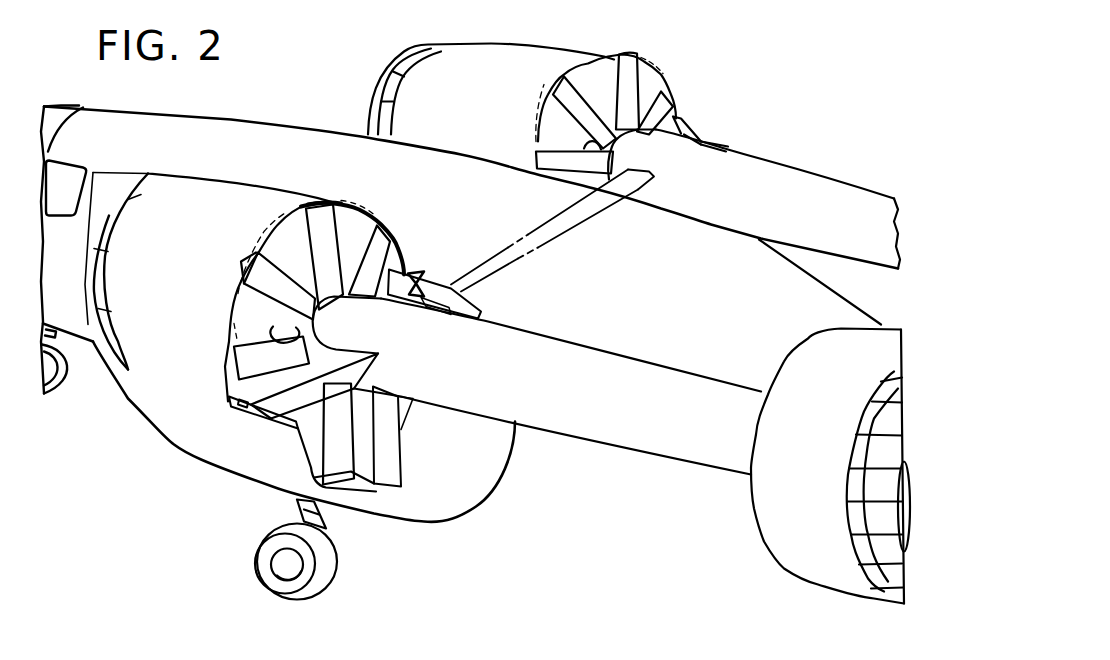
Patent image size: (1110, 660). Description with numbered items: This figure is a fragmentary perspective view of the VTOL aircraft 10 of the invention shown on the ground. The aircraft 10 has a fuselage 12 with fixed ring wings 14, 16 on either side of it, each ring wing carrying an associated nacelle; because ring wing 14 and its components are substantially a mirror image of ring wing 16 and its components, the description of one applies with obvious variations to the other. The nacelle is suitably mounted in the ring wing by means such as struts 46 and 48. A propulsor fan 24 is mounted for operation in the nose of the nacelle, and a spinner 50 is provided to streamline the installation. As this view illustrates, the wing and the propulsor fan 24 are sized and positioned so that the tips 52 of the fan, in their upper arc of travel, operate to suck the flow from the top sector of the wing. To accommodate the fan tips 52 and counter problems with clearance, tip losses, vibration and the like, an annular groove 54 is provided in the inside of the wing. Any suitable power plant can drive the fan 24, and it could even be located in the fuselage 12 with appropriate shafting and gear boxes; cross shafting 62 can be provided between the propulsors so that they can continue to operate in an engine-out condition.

The VTOL aircraft 10 is at (106, 409).
The fuselage 12 is at (228, 118).
The ring wing 14 is at (491, 42).
The ring wing 16 is at (224, 474).
The propulsor fan 24 is at (398, 244).
The strut 46 is at (262, 418).
The strut 48 is at (395, 456).
The spinner 50 is at (323, 327).
The fan tips 52 is at (319, 201).
The annular groove 54 is at (418, 272).
The cross shafting 62 is at (567, 208).